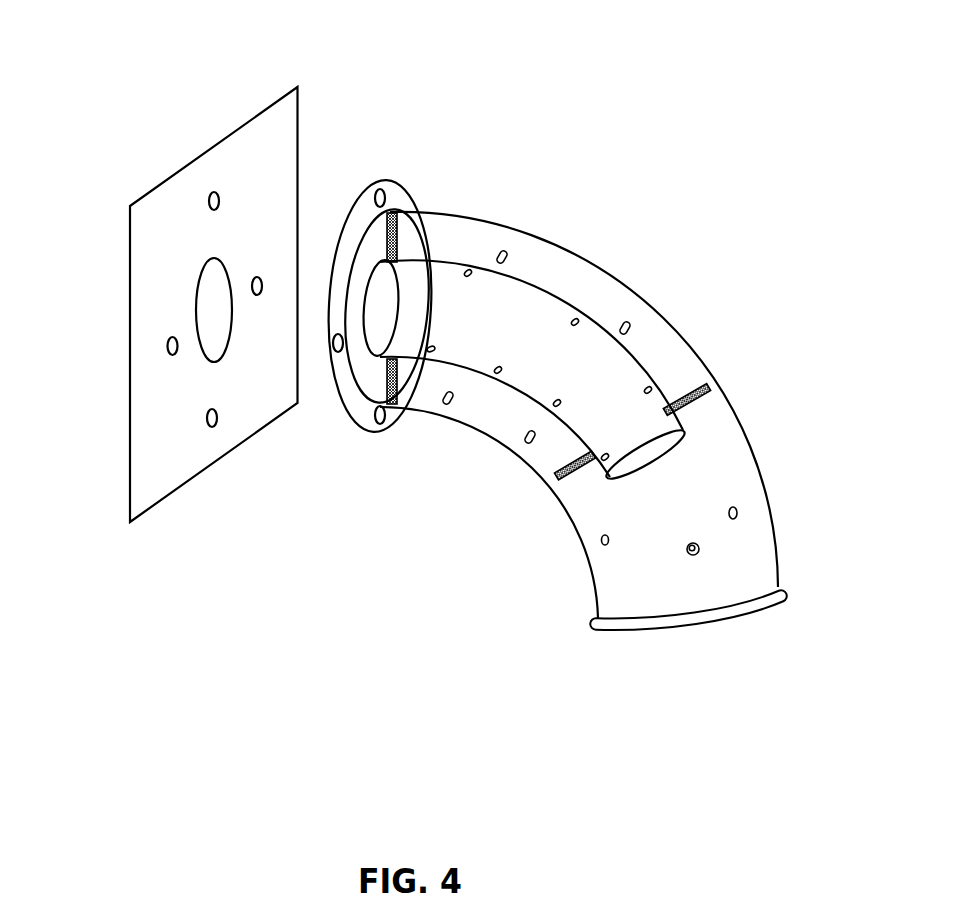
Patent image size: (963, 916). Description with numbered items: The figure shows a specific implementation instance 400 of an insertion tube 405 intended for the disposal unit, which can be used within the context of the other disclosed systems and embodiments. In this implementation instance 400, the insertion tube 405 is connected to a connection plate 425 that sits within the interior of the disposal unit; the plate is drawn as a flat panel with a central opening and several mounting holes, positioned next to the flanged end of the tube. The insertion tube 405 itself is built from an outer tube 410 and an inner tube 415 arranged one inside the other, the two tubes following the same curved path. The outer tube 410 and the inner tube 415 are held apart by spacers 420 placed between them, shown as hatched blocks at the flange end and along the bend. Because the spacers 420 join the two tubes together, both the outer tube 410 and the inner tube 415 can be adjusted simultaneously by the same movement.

The implementation instance 400 is at (60, 37).
The insertion tube 405 is at (591, 473).
The outer tube 410 is at (613, 280).
The inner tube 415 is at (597, 390).
The spacers 420 is at (395, 404).
The connection plate 425 is at (298, 122).